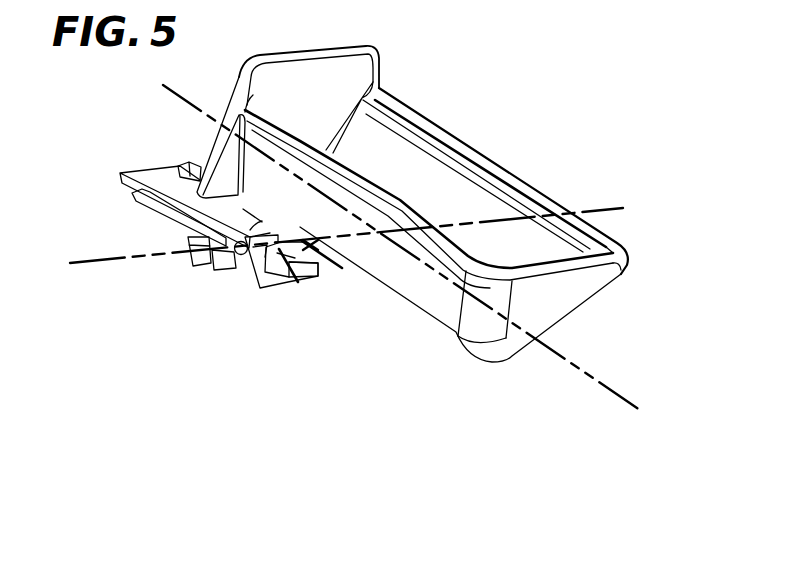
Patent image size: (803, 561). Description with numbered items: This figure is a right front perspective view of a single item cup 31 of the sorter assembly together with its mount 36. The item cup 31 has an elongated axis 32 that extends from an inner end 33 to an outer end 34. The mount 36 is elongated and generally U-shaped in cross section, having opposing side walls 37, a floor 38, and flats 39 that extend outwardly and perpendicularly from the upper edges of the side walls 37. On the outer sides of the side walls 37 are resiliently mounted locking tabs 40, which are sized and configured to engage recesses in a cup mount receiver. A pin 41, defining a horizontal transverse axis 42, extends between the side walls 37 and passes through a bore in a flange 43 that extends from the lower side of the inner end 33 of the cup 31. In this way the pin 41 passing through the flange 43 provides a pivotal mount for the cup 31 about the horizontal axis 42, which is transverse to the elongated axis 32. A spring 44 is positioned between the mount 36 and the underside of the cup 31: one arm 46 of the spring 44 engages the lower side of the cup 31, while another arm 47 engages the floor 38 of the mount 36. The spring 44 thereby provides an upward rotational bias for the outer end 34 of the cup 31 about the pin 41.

The item cup 31 is at (438, 182).
The elongated axis 32 is at (185, 100).
The inner end 33 is at (315, 88).
The outer end 34 is at (552, 308).
The mount 36 is at (270, 295).
The side walls 37 is at (157, 205).
The floor 38 is at (318, 285).
The flats 39 is at (133, 173).
The locking tab 40 is at (183, 262).
The pin 41 is at (228, 266).
The horizontal transverse axis 42 is at (88, 258).
The flange 43 is at (260, 220).
The spring 44 is at (312, 240).
The arm 46 is at (338, 268).
The arm 47 is at (303, 283).